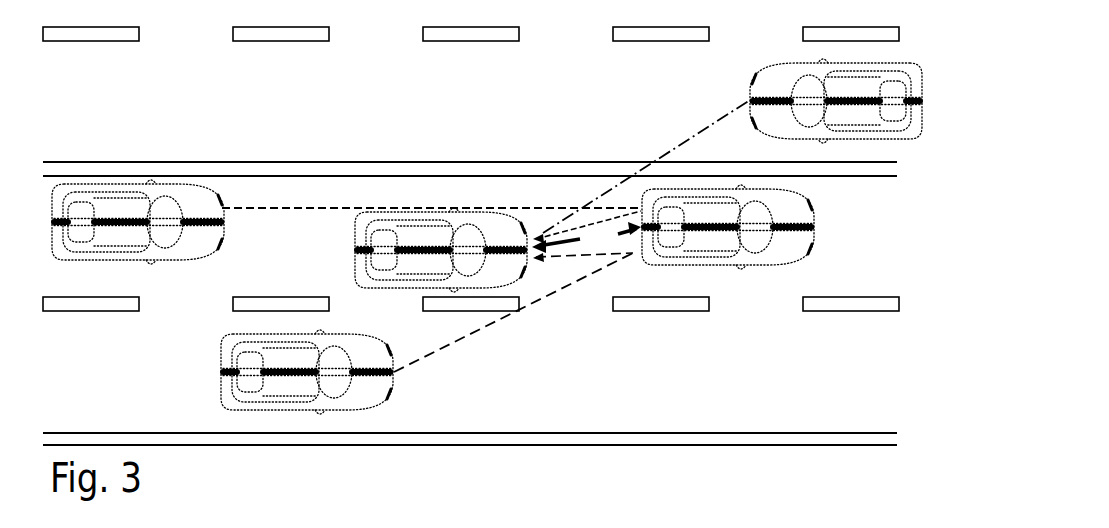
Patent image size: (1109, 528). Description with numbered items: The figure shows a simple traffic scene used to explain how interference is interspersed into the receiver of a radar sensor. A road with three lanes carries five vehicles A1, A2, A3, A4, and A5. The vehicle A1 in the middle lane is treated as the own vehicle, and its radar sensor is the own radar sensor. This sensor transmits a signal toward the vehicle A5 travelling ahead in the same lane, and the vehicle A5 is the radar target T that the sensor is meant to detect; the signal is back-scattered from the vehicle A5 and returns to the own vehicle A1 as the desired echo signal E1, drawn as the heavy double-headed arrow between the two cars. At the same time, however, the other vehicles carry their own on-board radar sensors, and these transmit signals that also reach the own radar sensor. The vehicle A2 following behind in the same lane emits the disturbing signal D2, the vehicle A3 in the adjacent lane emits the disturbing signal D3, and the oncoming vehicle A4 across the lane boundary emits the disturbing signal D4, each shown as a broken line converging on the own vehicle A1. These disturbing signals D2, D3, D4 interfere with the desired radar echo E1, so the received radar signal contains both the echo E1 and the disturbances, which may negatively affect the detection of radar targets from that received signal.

The own vehicle A1 is at (488, 228).
The vehicle A2 is at (188, 198).
The vehicle A3 is at (367, 397).
The vehicle A4 is at (777, 80).
The vehicle (radar target T) A5 is at (797, 217).
The disturbing signal D2 is at (431, 196).
The disturbing signal D3 is at (513, 312).
The disturbing signal D4 is at (646, 166).
The echo signal E1 is at (586, 236).